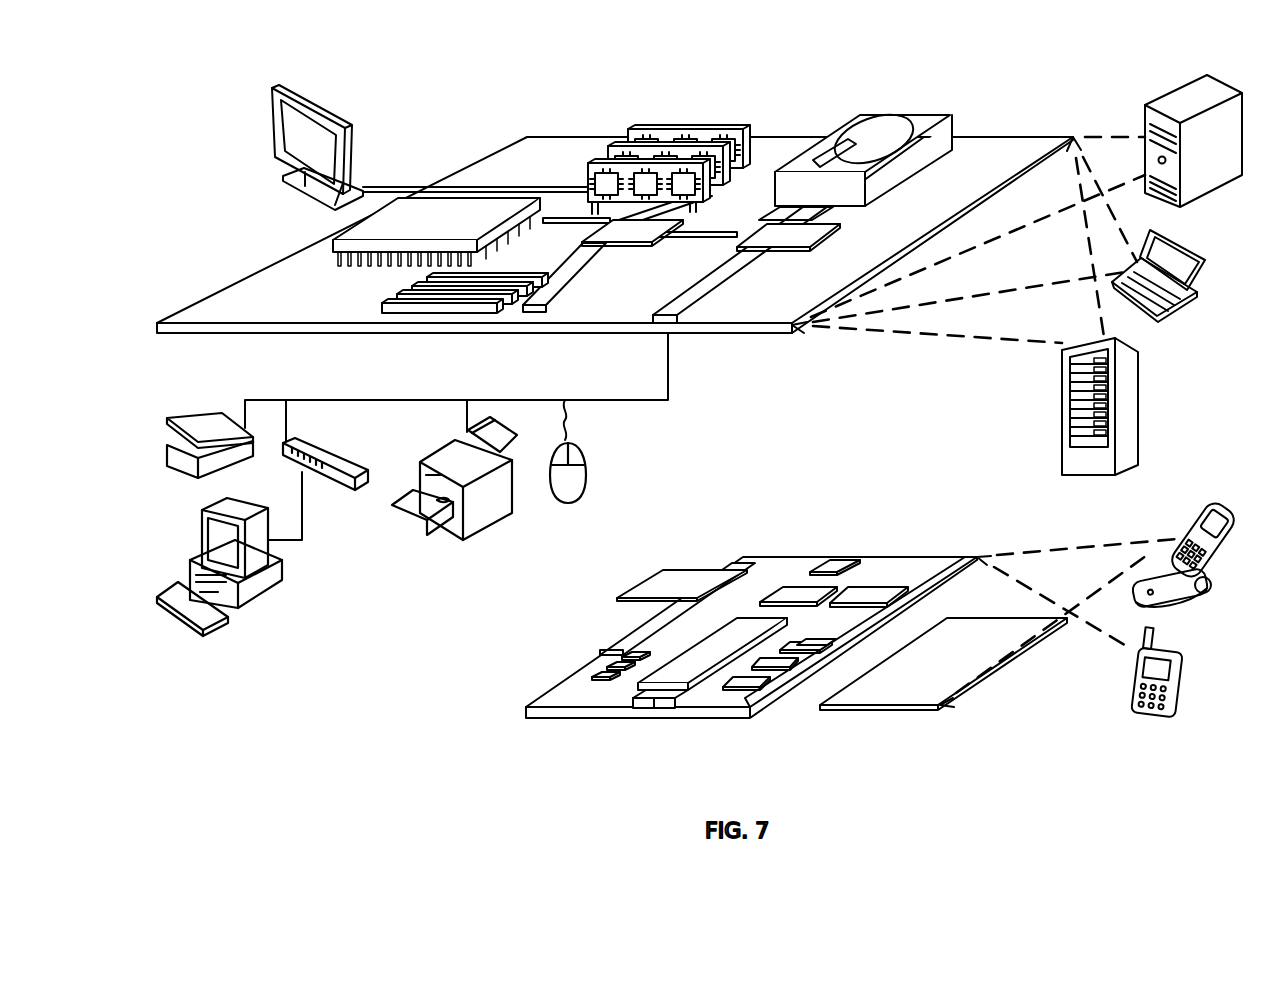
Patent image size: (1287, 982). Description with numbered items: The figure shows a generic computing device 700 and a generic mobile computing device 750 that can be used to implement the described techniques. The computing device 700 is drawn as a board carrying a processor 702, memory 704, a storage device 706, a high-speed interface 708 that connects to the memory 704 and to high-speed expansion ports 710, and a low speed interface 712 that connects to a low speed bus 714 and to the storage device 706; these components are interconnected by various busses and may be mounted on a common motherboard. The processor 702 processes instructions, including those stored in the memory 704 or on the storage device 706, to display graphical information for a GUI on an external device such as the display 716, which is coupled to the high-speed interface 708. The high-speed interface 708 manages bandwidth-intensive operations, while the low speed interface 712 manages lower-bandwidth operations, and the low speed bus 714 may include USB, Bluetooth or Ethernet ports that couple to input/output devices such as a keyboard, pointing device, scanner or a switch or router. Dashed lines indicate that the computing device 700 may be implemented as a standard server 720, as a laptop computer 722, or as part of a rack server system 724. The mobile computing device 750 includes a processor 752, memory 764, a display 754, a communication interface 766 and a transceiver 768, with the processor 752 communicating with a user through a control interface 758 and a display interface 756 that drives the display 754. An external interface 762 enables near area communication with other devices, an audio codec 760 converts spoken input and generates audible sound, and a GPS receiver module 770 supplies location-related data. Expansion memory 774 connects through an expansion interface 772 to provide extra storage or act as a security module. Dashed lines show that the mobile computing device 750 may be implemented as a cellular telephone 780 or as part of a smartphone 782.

The computing device 700 is at (450, 112).
The processor 702 is at (338, 243).
The memory 704 is at (644, 130).
The storage device 706 is at (852, 120).
The high-speed interface 708 is at (612, 233).
The high-speed expansion ports 710 is at (385, 301).
The low speed interface 712 is at (770, 235).
The low speed bus 714 is at (677, 322).
The display 716 is at (278, 86).
The standard server 720 is at (1145, 120).
The laptop computer 722 is at (1203, 258).
The rack server system 724 is at (1062, 433).
The mobile computing device 750 is at (500, 713).
The processor 752 is at (688, 690).
The display 754 is at (908, 692).
The display interface 756 is at (752, 684).
The control interface 758 is at (774, 664).
The audio codec 760 is at (808, 646).
The external interface 762 is at (655, 710).
The memory 764 is at (596, 670).
The communication interface 766 is at (795, 592).
The transceiver 768 is at (870, 592).
The GPS receiver module 770 is at (842, 566).
The expansion interface 772 is at (742, 565).
The expansion memory 774 is at (664, 572).
The cellular telephone 780 is at (1194, 526).
The smartphone 782 is at (1136, 682).